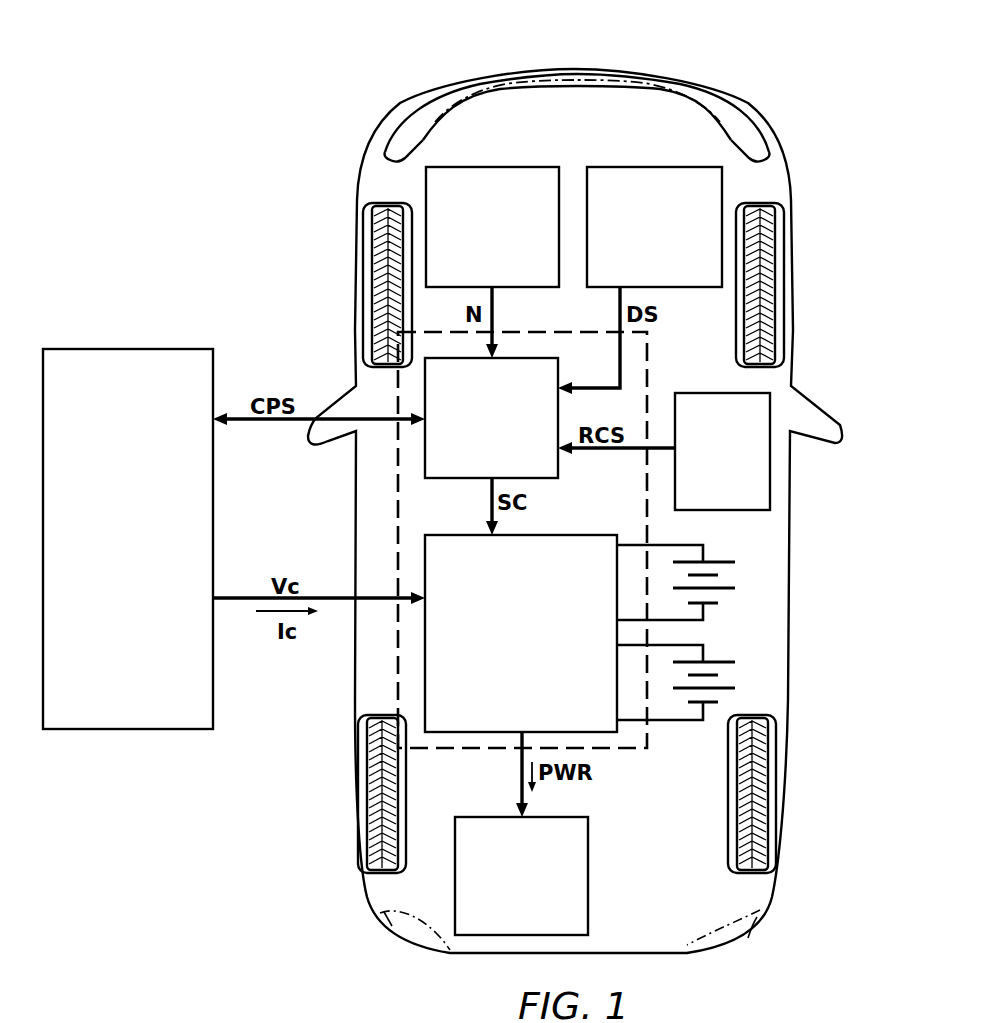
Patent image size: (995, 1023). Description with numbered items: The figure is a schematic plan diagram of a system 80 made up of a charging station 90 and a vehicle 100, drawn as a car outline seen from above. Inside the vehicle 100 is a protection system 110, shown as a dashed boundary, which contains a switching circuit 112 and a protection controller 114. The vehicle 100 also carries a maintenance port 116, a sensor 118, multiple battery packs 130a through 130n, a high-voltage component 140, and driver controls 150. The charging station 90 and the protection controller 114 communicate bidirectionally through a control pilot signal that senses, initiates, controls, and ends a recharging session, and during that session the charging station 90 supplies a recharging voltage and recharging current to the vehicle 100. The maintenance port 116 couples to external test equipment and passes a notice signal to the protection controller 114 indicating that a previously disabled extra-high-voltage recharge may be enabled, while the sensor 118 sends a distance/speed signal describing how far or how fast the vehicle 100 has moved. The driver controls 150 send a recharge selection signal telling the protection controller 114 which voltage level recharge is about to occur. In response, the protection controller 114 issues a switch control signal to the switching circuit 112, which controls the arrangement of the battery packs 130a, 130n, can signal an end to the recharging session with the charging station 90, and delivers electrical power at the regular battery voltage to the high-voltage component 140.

The system 80 is at (366, 84).
The charging station 90 is at (132, 349).
The vehicle 100 is at (370, 163).
The protection system 110 is at (647, 382).
The switching circuit 112 is at (577, 535).
The protection controller 114 is at (425, 444).
The maintenance port 116 is at (495, 166).
The sensor 118 is at (660, 166).
The battery pack 130a is at (717, 577).
The battery pack 130n is at (717, 677).
The high-voltage component 140 is at (588, 838).
The driver controls 150 is at (770, 455).